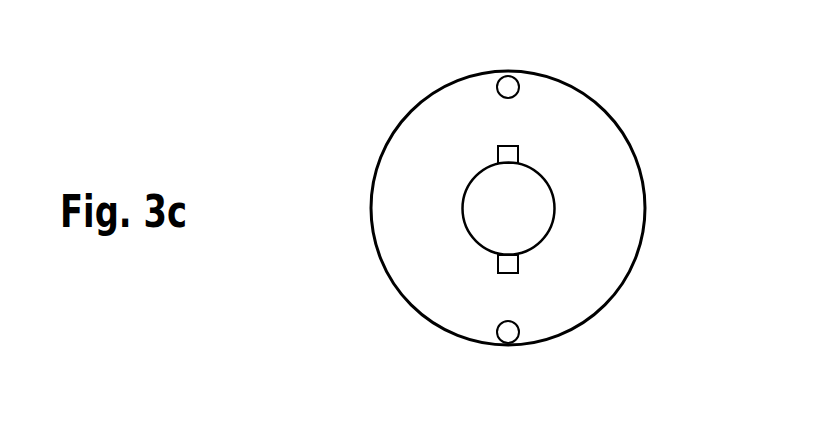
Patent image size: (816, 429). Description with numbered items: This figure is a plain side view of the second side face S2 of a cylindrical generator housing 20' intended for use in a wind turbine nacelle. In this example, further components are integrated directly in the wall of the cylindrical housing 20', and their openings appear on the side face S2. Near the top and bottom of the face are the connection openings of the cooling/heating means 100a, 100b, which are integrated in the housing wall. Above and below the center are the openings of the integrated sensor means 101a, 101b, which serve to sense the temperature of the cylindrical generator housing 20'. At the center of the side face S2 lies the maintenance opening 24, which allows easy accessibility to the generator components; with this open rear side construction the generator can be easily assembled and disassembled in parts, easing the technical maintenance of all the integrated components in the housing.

The second side face S2 is at (544, 203).
The cylindrical generator housing 20' is at (544, 208).
The maintenance opening 24 is at (526, 222).
The sensor means 101a is at (518, 151).
The sensor means 101b is at (519, 266).
The cooling/heating means 100a is at (508, 86).
The cooling/heating means 100b is at (510, 334).